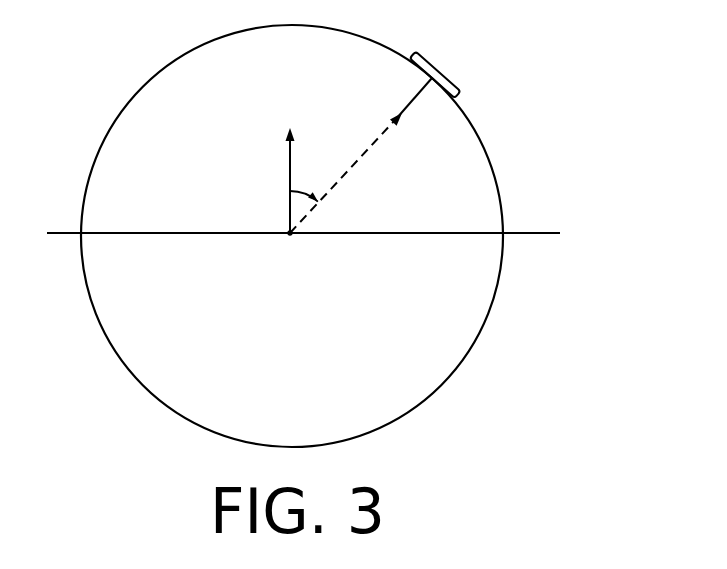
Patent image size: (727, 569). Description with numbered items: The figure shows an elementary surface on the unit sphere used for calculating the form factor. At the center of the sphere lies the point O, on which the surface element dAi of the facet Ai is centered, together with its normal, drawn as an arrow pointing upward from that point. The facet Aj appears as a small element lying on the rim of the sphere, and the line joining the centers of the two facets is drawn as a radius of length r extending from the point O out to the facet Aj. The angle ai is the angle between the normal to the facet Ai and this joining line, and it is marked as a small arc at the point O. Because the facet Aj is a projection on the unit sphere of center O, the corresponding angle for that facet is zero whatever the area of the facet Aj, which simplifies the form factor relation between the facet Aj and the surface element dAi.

The center point O is at (277, 253).
The surface element dAi is at (331, 201).
The angle αi ai is at (306, 177).
The distance r is at (361, 155).
The facet Aj is at (413, 59).